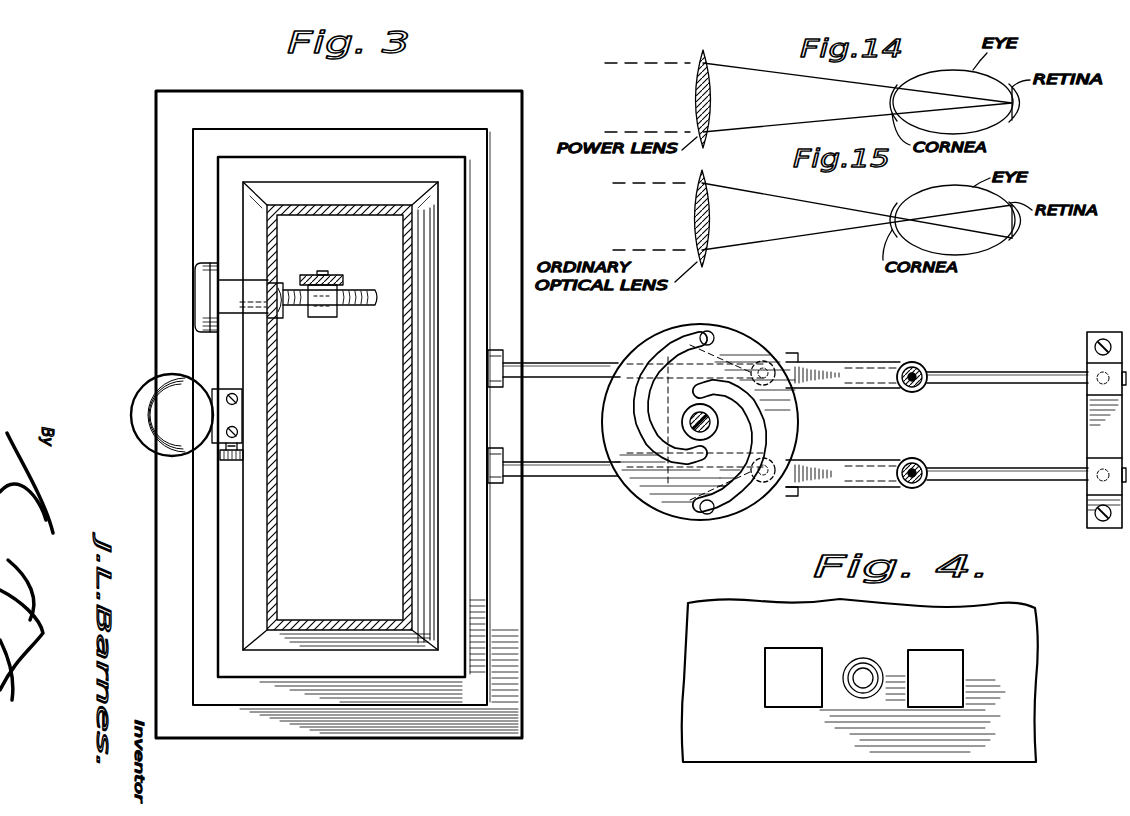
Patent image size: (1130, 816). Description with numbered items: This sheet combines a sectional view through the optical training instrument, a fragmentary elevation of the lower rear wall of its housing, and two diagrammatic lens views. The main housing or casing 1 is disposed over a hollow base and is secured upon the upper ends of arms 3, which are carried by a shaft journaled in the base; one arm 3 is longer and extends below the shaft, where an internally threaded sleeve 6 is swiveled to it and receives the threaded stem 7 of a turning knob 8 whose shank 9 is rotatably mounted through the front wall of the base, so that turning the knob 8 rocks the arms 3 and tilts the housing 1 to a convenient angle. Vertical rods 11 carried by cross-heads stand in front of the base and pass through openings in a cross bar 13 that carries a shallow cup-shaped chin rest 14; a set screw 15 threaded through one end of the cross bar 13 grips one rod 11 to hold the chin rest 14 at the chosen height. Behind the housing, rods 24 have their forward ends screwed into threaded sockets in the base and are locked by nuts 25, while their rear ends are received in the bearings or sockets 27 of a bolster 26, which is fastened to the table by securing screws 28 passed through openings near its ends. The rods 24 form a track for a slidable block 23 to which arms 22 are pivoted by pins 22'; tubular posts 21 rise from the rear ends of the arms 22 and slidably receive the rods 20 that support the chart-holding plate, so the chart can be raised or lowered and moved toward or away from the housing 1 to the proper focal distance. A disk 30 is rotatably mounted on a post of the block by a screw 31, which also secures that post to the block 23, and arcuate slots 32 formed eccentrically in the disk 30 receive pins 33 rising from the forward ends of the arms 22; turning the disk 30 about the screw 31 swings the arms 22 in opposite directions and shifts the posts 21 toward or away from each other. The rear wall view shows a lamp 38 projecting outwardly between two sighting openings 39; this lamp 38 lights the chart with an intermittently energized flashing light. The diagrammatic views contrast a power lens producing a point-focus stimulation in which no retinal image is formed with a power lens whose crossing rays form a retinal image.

In FIG. 3, the main housing or casing 1 is at (470, 593).
In FIG. 4, the main housing or casing 1 is at (1017, 690).
In FIG. 3, the arms 3 is at (338, 275).
In FIG. 3, the internally threaded sleeve 6 is at (323, 317).
In FIG. 3, the threaded stem 7 is at (364, 308).
In FIG. 3, the turning knob 8 is at (200, 300).
In FIG. 3, the shank 9 is at (262, 282).
In FIG. 3, the rods 11 is at (240, 432).
In FIG. 3, the cross bar 13 is at (222, 420).
In FIG. 3, the chin rest 14 is at (147, 443).
In FIG. 3, the set screw 15 is at (243, 455).
In FIG. 3, the rods 20 is at (918, 362).
In FIG. 3, the tubular posts or sleeves 21 is at (908, 462).
In FIG. 3, the arms 22 is at (843, 424).
In FIG. 3, the pins 22' is at (773, 427).
In FIG. 3, the block 23 is at (792, 354).
In FIG. 3, the rods 24 is at (998, 473).
In FIG. 3, the locking nuts 25 is at (495, 449).
In FIG. 3, the bolster 26 is at (1088, 512).
In FIG. 3, the bearings or sockets 27 is at (1092, 463).
In FIG. 3, the securing screws 28 is at (1092, 348).
In FIG. 3, the disk 30 is at (643, 487).
In FIG. 3, the screw 31 is at (712, 430).
In FIG. 3, the arcuate slots 32 is at (640, 415).
In FIG. 3, the pins 33 is at (710, 332).
In FIG. 4, the lamp 38 is at (865, 662).
In FIG. 4, the sighting openings 39 is at (787, 648).